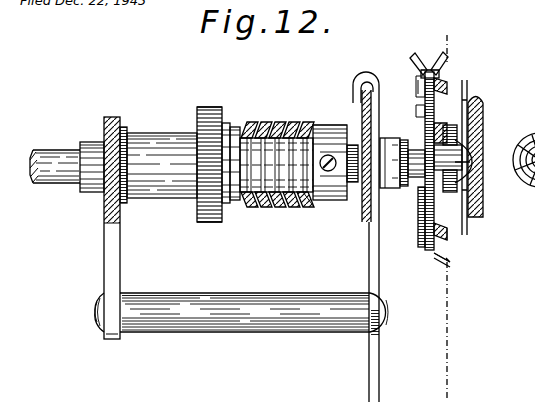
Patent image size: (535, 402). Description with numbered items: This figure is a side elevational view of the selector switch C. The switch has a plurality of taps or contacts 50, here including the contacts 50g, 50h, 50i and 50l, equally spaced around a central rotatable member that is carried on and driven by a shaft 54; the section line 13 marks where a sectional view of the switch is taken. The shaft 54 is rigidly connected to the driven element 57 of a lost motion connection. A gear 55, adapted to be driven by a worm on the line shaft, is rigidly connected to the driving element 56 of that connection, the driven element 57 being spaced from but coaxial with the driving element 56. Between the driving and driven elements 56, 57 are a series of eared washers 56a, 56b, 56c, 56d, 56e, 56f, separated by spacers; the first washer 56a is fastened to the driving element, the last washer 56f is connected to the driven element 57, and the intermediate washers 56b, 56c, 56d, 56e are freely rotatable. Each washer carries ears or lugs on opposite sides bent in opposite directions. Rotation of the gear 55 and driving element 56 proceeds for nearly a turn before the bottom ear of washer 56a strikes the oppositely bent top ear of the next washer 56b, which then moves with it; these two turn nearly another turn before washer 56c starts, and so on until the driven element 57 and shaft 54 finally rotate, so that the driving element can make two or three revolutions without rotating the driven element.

The gear 55 is at (207, 107).
The shaft 54 is at (345, 147).
The driving element 56 is at (232, 207).
The eared washer 56a is at (241, 210).
The eared washer 56b is at (267, 207).
The eared washer 56c is at (281, 208).
The eared washer 56d is at (298, 207).
The eared washer 56e is at (310, 208).
The eared washer 56f is at (331, 203).
The driven element 57 is at (320, 200).
The contact 50l is at (430, 52).
The contact 50i is at (534, 205).
The contact 50h is at (449, 238).
The contact 50g is at (444, 265).
The taps or contacts 50 is at (532, 130).
The selector switch C is at (461, 71).
The section line 13 is at (492, 42).